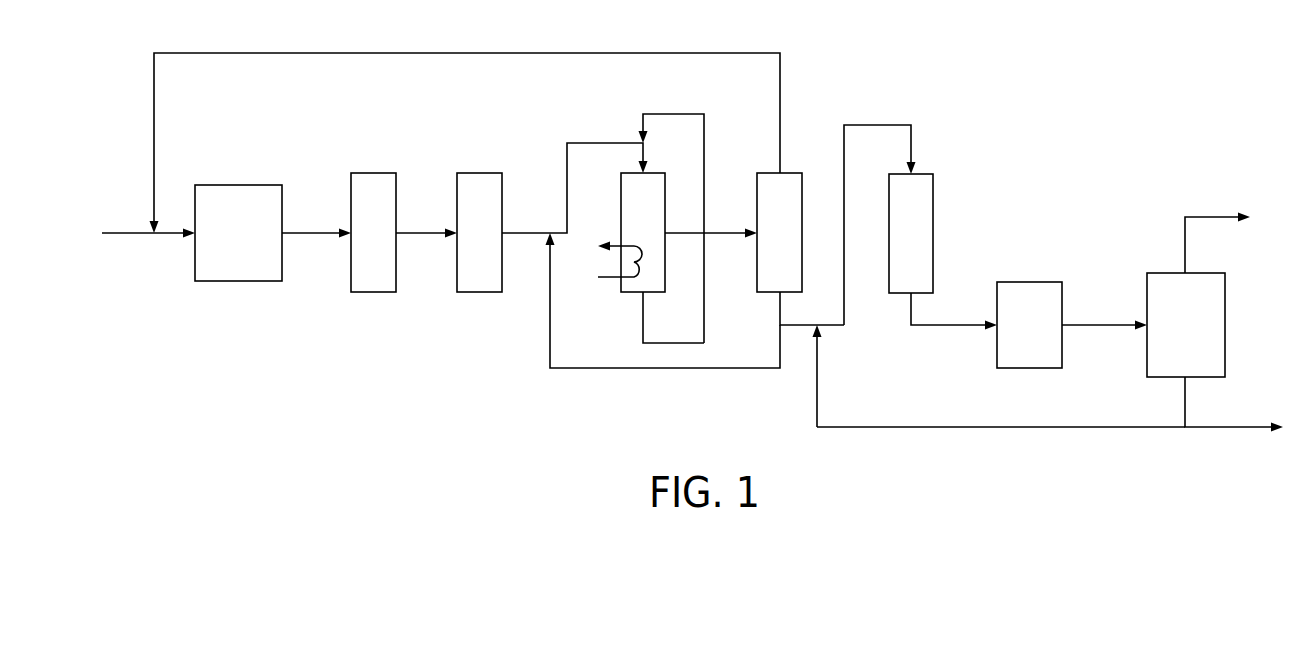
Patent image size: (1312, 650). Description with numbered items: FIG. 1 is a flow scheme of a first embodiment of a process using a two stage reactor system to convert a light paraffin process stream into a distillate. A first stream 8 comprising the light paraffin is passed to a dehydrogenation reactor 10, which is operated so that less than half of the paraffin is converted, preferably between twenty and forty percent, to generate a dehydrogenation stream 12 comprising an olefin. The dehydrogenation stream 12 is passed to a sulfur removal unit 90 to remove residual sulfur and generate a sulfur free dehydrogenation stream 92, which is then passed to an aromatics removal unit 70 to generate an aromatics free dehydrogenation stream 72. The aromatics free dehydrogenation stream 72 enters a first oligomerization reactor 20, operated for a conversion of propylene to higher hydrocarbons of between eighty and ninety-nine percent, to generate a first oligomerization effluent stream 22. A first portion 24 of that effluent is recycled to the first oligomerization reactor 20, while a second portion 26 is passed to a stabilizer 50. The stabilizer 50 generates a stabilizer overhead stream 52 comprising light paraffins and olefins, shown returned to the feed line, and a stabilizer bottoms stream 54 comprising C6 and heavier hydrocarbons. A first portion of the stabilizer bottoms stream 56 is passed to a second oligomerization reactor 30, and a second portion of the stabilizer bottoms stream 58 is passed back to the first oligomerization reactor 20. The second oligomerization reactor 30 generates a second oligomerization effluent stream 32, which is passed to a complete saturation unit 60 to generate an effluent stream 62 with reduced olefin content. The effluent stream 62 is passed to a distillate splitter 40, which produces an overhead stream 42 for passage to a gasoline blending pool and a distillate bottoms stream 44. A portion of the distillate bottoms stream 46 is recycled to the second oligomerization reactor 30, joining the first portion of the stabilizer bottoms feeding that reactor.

The first stream 8 is at (130, 233).
The dehydrogenation reactor 10 is at (248, 185).
The dehydrogenation stream 12 is at (316, 235).
The sulfur removal unit 90 is at (368, 173).
The sulfur free dehydrogenation stream 92 is at (420, 235).
The aromatics removal unit 70 is at (474, 173).
The aromatics free dehydrogenation stream 72 is at (526, 231).
The first oligomerization reactor 20 is at (650, 173).
The first oligomerization effluent stream 22 is at (643, 327).
The first portion of the first oligomerization stream 24 is at (688, 114).
The second portion of the first oligomerization stream 26 is at (726, 231).
The stabilizer 50 is at (786, 173).
The stabilizer overhead stream 52 is at (714, 53).
The stabilizer bottoms stream 54 is at (780, 319).
The first portion of the stabilizer bottoms stream 56 is at (870, 125).
The second portion of the stabilizer bottoms stream 58 is at (550, 337).
The second oligomerization reactor 30 is at (925, 174).
The second oligomerization effluent stream 32 is at (918, 325).
The complete saturation unit 60 is at (1032, 282).
The effluent stream 62 is at (1072, 325).
The distillate splitter 40 is at (1208, 273).
The overhead stream 42 is at (1202, 216).
The distillate bottoms stream 44 is at (1203, 427).
The portion of the distillate bottoms stream 46 is at (880, 427).